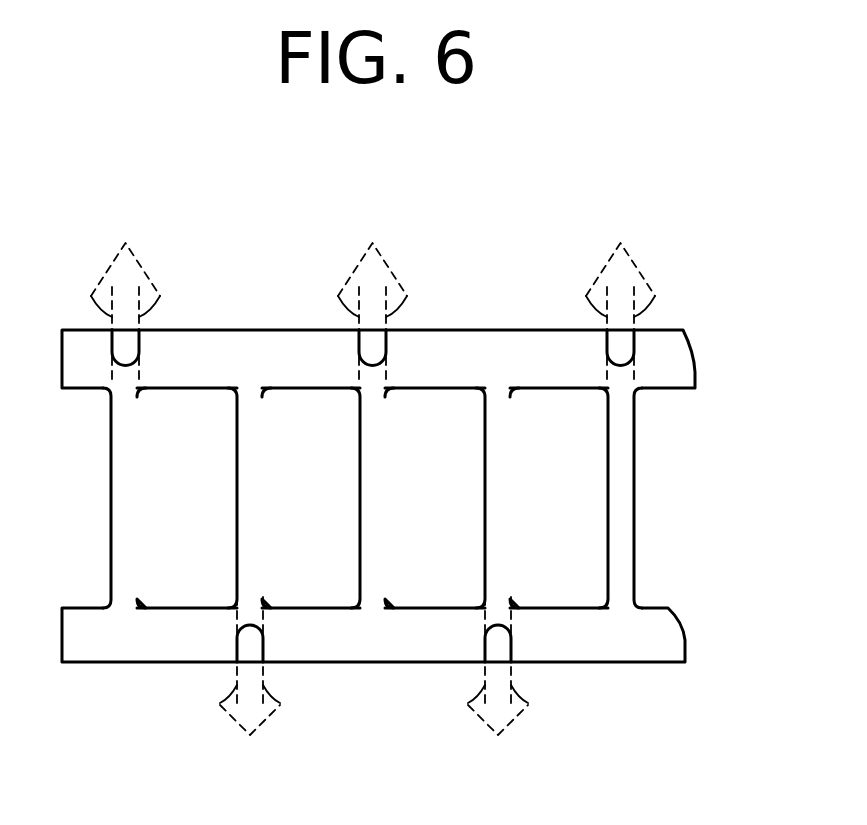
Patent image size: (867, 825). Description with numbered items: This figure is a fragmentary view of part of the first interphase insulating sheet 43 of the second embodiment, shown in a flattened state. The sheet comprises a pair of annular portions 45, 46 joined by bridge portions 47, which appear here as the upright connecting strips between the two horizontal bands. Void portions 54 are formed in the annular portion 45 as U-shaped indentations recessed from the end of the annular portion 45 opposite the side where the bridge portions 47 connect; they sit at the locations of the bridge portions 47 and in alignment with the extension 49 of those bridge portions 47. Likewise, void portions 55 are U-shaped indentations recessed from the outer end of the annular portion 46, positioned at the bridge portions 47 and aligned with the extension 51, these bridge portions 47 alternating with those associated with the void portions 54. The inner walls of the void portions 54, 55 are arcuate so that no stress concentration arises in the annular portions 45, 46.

The first interphase insulating sheet 43 is at (500, 298).
The annular portion 45 is at (252, 348).
The annular portion 46 is at (152, 648).
The bridge portions 47 is at (245, 492).
The extension of the bridge portions 49 is at (373, 295).
The extension of the bridge portions 51 is at (374, 683).
The void portions 54 is at (127, 345).
The void portions 55 is at (257, 650).